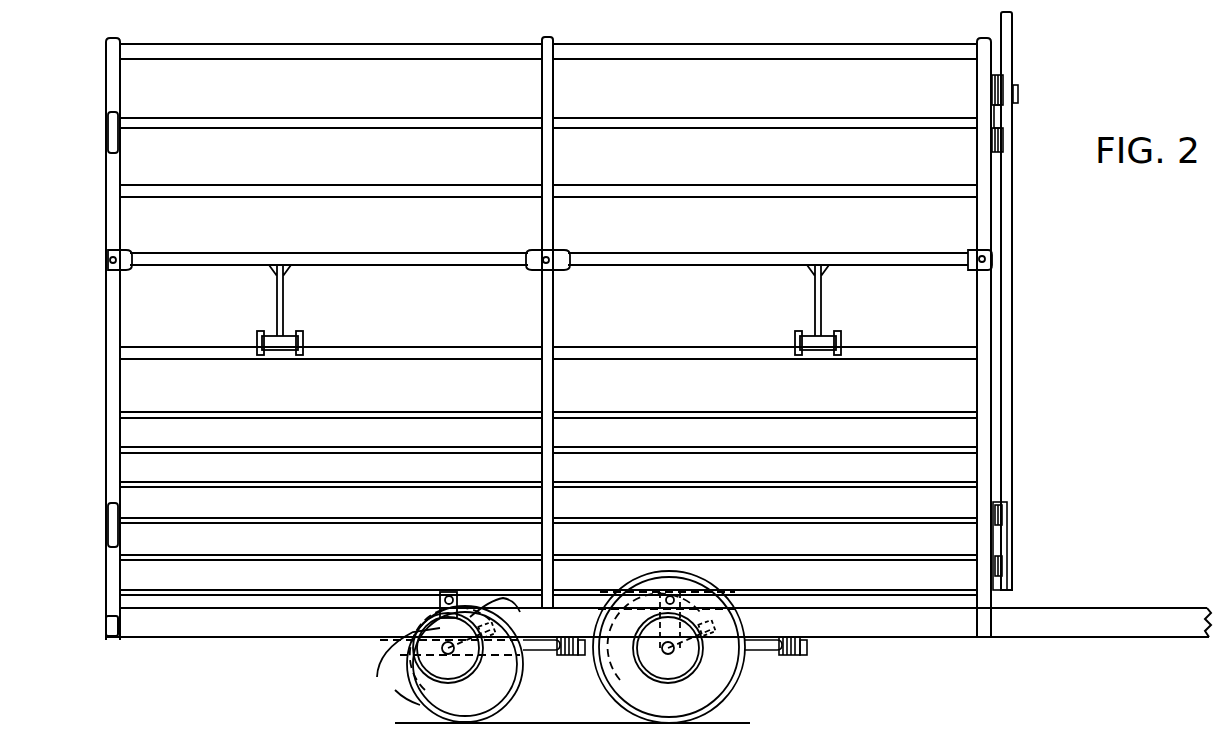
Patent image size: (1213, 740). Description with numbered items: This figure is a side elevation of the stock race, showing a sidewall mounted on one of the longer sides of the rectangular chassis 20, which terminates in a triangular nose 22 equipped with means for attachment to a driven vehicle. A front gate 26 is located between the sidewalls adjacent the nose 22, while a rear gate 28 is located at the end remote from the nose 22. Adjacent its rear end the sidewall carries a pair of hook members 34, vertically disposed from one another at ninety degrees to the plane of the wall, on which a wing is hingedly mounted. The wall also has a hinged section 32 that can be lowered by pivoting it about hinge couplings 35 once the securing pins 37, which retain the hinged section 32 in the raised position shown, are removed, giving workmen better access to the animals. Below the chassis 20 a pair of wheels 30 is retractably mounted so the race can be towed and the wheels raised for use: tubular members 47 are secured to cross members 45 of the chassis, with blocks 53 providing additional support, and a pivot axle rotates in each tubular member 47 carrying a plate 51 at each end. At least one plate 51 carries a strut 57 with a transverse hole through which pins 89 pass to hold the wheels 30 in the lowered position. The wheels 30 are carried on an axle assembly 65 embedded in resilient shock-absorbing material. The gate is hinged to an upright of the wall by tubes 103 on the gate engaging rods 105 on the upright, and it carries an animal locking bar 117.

The rectangular chassis 20 is at (262, 622).
The triangular nose 22 is at (1128, 622).
The front gate 26 is at (1000, 386).
The rear gate 28 is at (122, 312).
The wheels 30 is at (395, 690).
The hinged section 32 is at (710, 268).
The hook members 34 is at (122, 140).
The hinge couplings 35 is at (290, 340).
The securing pins 37 is at (126, 254).
The cross members 45 is at (525, 655).
The tubular members 47 is at (552, 655).
The plate 51 is at (558, 662).
The blocks 53 is at (581, 658).
The strut 57 is at (440, 608).
The axle assembly 65 is at (378, 680).
The pins 89 is at (450, 592).
The tubes 103 is at (996, 108).
The rods 105 is at (996, 80).
The animal locking bar 117 is at (1012, 206).